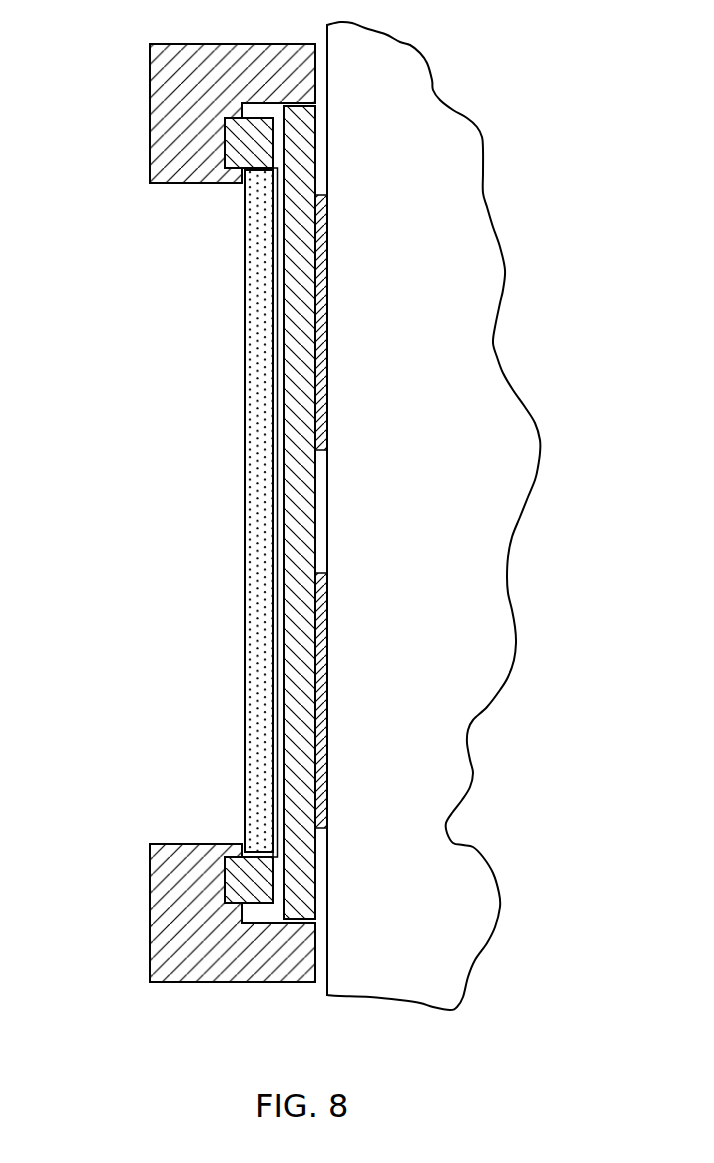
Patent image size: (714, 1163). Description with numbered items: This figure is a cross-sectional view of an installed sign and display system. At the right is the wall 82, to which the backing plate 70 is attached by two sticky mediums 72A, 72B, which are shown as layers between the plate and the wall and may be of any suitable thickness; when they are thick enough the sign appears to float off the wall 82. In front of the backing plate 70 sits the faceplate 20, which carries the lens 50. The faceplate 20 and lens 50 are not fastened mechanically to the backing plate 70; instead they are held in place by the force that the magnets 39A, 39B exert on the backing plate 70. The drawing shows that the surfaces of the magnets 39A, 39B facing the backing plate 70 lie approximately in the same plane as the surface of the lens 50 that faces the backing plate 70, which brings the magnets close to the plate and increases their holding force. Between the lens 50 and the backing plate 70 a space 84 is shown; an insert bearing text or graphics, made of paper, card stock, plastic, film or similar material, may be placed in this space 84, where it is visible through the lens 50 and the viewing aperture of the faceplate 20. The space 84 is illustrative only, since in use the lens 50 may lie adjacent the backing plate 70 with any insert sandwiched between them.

The faceplate 20 is at (152, 120).
The magnet 39A is at (247, 135).
The magnet 39B is at (247, 877).
The lens 50 is at (244, 292).
The backing plate 70 is at (298, 516).
The sticky medium 72A is at (323, 367).
The sticky medium 72B is at (327, 698).
The wall 82 is at (438, 242).
The space 84 is at (277, 415).